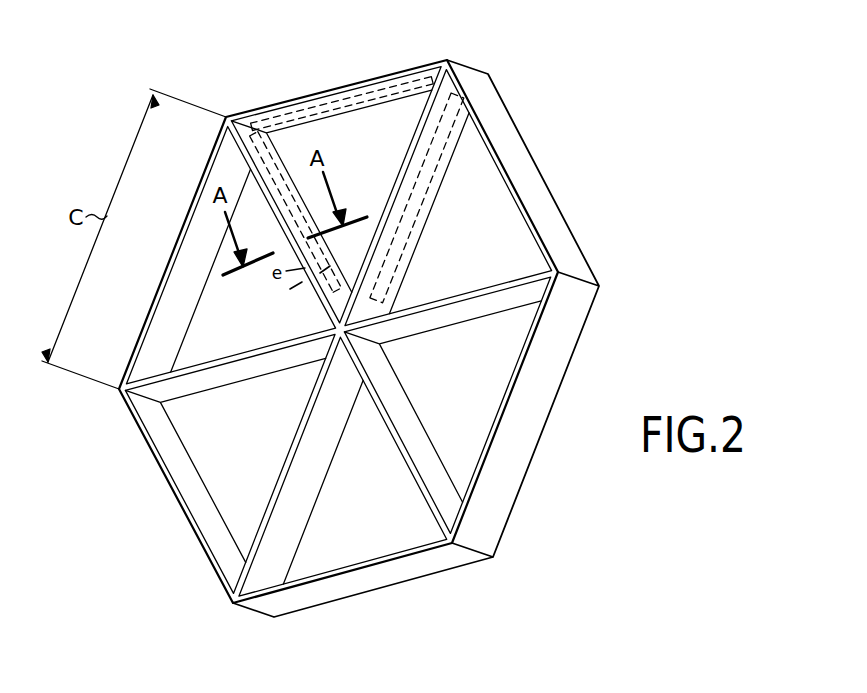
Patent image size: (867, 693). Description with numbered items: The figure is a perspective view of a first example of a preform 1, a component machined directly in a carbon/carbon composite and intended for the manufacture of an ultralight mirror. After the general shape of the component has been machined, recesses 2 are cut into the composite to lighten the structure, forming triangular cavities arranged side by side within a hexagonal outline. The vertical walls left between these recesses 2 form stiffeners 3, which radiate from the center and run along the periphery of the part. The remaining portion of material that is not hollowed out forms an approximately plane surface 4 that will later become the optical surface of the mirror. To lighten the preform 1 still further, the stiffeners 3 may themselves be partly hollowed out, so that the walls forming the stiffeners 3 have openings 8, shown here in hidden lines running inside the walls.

The preform 1 is at (375, 339).
The recesses 2 is at (348, 159).
The stiffeners 3 is at (252, 137).
The plane surface 4 is at (517, 131).
The openings 8 is at (368, 76).